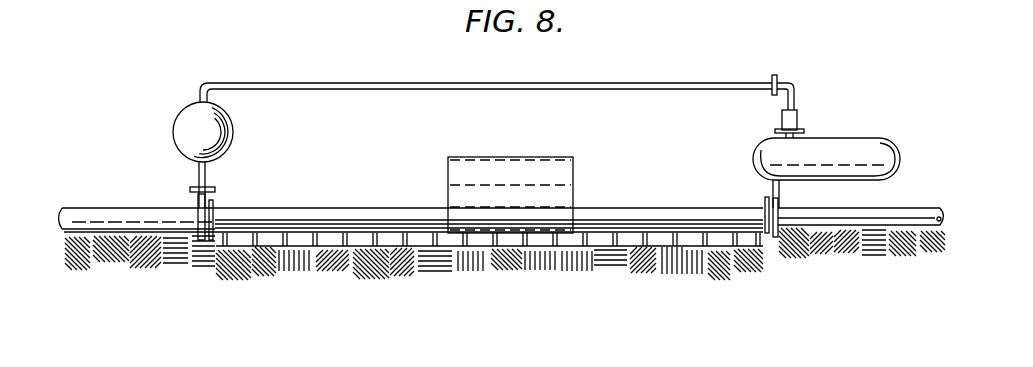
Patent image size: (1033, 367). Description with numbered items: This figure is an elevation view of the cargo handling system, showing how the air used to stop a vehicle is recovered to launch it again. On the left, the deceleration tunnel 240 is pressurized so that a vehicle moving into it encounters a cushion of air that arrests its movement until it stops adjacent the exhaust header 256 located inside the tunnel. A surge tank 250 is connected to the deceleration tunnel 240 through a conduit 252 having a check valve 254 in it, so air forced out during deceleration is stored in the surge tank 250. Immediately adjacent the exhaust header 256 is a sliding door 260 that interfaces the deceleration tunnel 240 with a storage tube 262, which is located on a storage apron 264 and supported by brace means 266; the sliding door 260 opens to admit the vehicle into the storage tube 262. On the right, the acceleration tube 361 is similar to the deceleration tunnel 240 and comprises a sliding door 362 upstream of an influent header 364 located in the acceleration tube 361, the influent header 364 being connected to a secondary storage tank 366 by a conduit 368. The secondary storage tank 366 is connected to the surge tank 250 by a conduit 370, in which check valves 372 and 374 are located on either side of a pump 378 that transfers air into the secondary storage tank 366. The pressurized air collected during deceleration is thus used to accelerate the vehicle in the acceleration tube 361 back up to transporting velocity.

The deceleration tunnel 240 is at (90, 218).
The surge tank 250 is at (225, 130).
The conduit 252 is at (197, 170).
The check valve 254 is at (190, 188).
The exhaust header 256 is at (193, 230).
The sliding door 260 is at (213, 213).
The storage tube 262 is at (290, 217).
The storage apron 264 is at (391, 204).
The brace means 266 is at (250, 240).
The acceleration tube 361 is at (893, 212).
The sliding door 362 is at (763, 202).
The influent header 364 is at (780, 217).
The secondary storage tank 366 is at (855, 147).
The conduit 368 is at (780, 192).
The conduit 370 is at (603, 85).
The check valve 372 is at (778, 75).
The check valve 374 is at (777, 130).
The pump 378 is at (797, 118).